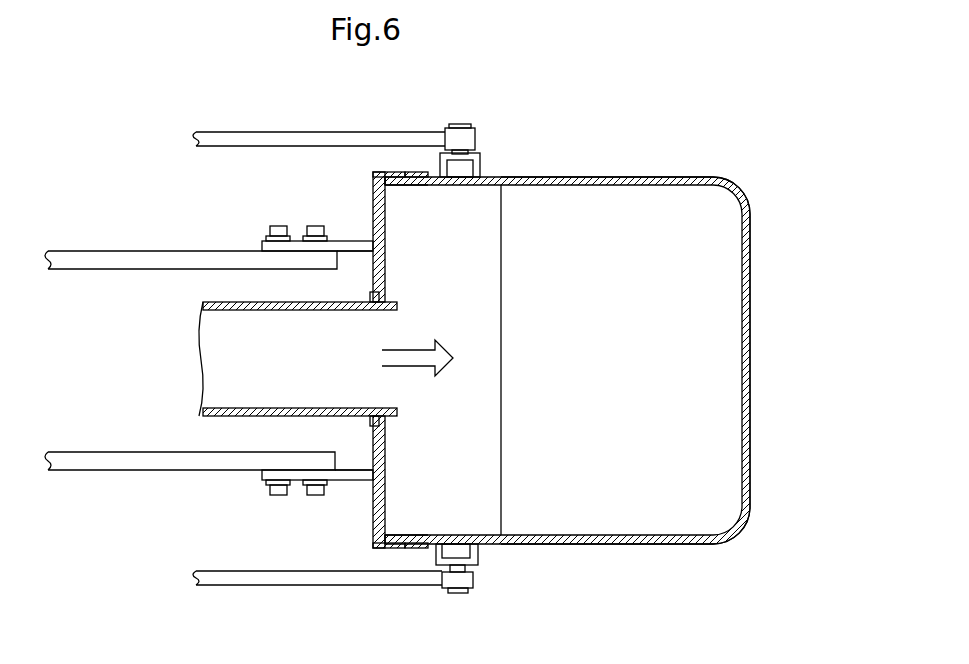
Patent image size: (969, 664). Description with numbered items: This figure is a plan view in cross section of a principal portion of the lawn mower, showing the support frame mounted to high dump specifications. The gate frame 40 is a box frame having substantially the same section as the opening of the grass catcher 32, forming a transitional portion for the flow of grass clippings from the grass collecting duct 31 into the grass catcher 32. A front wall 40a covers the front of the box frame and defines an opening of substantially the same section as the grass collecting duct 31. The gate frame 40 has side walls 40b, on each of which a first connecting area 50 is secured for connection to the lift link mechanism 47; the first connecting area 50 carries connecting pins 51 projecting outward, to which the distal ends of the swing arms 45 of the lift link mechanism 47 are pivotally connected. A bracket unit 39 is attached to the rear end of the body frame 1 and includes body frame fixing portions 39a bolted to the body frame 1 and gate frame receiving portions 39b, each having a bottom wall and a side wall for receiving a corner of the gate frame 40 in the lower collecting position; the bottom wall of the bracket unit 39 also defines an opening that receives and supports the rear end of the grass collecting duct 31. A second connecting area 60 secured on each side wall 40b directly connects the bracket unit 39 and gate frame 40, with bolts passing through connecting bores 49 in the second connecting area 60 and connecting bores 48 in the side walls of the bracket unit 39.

The body frame 1 is at (108, 247).
The grass collecting duct 31 is at (224, 302).
The grass catcher 32 is at (614, 178).
The bracket unit 39 is at (343, 238).
The body frame fixing portion 39a is at (357, 252).
The gate frame receiving portion 39b is at (372, 205).
The gate frame 40 is at (490, 178).
The front wall 40a is at (385, 268).
The side wall 40b is at (461, 187).
The swing arm 45 is at (250, 149).
The lift link mechanism 47 is at (280, 358).
The connecting bore 48 is at (414, 176).
The connecting bore 49 is at (410, 186).
The first connecting area 50 is at (481, 146).
The connecting pin 51 is at (462, 124).
The second connecting area 60 is at (392, 165).